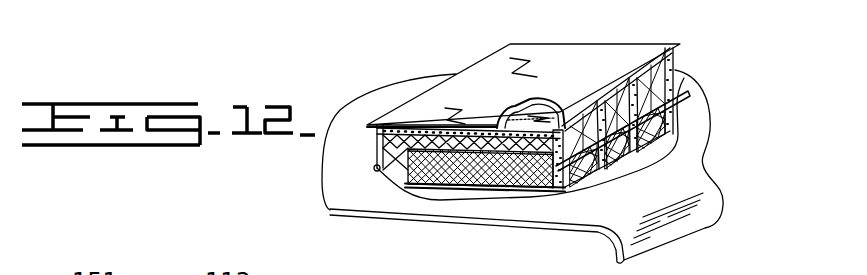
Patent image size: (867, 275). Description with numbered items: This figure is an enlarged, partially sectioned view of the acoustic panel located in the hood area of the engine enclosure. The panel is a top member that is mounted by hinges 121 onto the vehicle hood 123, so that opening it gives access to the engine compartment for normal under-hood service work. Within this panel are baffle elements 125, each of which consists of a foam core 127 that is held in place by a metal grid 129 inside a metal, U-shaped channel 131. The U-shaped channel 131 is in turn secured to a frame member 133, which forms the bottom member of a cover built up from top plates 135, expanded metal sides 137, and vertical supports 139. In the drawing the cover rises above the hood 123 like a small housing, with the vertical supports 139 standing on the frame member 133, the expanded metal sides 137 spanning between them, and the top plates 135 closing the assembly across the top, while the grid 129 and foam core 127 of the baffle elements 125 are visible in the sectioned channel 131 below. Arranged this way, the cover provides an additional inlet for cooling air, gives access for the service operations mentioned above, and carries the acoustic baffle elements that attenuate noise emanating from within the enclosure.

The hinges 121 is at (374, 166).
The vehicle hood 123 is at (326, 192).
The baffle elements 125 is at (606, 190).
The foam core 127 is at (563, 190).
The metal grid 129 is at (453, 190).
The U-shaped channel 131 is at (437, 188).
The frame member 133 is at (684, 92).
The top plates 135 is at (495, 56).
The expanded metal sides 137 is at (668, 74).
The vertical supports 139 is at (672, 70).